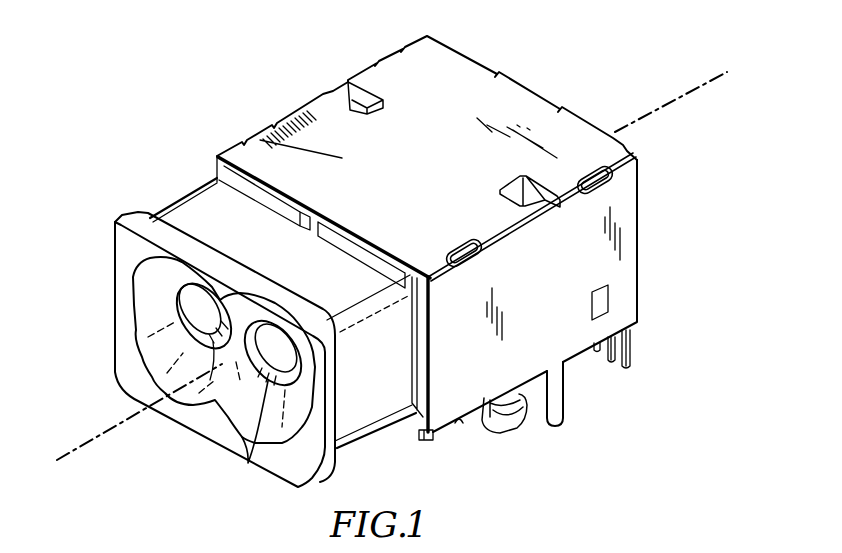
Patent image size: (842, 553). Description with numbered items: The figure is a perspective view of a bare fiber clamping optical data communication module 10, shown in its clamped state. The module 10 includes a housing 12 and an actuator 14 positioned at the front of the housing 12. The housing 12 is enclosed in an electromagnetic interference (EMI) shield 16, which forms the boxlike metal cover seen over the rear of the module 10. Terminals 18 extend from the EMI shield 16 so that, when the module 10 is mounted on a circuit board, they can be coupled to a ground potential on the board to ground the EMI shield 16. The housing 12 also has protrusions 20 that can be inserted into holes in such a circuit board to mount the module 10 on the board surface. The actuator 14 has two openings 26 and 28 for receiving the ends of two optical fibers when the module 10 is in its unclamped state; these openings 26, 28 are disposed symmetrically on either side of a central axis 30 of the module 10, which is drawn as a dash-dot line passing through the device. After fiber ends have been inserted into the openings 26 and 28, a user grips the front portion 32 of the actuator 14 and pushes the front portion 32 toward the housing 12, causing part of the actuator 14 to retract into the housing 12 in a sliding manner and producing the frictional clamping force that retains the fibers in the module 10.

The optical data communication module 10 is at (128, 132).
The housing 12 is at (562, 76).
The actuator 14 is at (162, 441).
The electromagnetic interference (EMI) shield 16 is at (640, 238).
The terminals 18 is at (563, 424).
The protrusions 20 is at (507, 433).
The opening 26 is at (197, 310).
The opening 28 is at (245, 450).
The central axis 30 is at (96, 433).
The front portion 32 is at (124, 372).